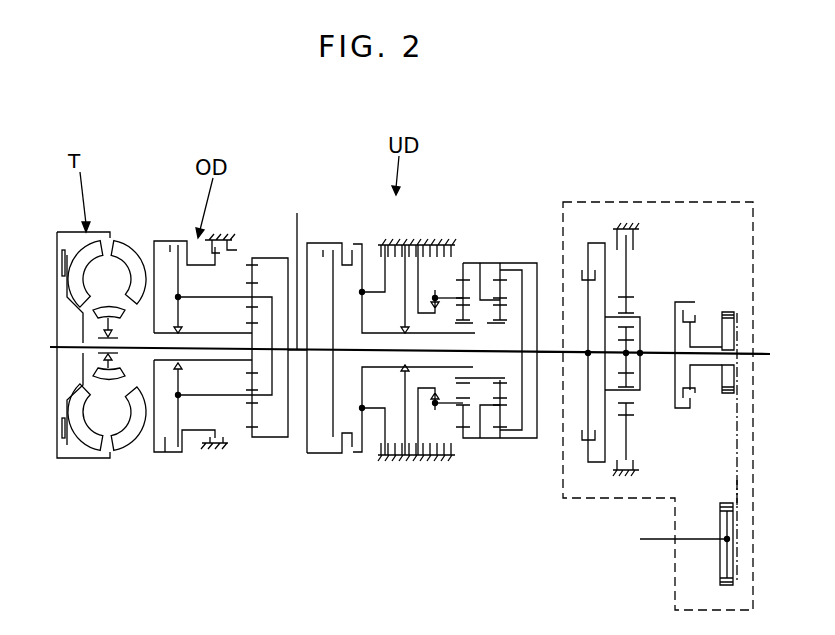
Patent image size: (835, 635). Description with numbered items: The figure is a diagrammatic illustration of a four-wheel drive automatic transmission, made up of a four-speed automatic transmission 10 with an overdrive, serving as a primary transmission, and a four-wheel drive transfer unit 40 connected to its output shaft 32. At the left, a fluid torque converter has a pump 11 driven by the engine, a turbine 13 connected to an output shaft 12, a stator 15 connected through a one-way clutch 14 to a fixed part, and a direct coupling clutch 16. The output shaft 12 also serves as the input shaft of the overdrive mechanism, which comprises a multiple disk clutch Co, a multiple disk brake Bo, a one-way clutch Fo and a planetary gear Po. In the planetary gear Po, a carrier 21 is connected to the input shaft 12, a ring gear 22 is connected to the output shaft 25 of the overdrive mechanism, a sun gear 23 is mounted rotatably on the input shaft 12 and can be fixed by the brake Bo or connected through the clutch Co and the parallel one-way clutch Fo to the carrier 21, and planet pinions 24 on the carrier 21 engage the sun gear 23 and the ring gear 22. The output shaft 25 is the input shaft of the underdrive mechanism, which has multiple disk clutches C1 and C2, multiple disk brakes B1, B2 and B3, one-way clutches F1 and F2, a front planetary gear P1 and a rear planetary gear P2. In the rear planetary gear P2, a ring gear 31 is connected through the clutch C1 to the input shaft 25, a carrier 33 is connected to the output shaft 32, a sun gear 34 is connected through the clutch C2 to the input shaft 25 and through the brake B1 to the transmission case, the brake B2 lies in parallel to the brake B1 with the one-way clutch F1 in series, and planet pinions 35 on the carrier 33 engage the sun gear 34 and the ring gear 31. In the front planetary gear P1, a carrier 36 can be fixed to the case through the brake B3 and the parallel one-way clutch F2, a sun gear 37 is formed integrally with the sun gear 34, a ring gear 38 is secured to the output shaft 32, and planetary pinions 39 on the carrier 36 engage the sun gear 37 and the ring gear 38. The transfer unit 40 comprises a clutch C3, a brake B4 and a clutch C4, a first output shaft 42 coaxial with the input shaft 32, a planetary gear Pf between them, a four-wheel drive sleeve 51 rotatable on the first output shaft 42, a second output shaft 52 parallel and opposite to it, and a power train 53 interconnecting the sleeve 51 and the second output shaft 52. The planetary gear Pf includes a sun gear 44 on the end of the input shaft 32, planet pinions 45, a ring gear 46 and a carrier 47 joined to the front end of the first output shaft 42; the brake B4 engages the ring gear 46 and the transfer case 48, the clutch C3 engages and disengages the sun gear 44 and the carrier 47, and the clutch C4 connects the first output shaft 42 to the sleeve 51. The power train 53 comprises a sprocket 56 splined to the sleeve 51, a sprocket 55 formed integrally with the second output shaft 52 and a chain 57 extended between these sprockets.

The four-speed automatic transmission 10 is at (297, 206).
The pump 11 is at (122, 253).
The output shaft 12 is at (145, 350).
The turbine 13 is at (85, 257).
The one-way clutch 14 is at (110, 363).
The stator 15 is at (100, 313).
The direct coupling clutch 16 is at (62, 262).
The carrier 21 is at (285, 433).
The ring gear 22 is at (272, 405).
The sun gear 23 is at (247, 372).
The planet pinions 24 is at (248, 408).
The output shaft 25 is at (297, 350).
The ring gear 31 is at (498, 292).
The output shaft 32 is at (550, 356).
The carrier 33 is at (485, 292).
The sun gear 34 is at (483, 333).
The planet pinions 35 is at (505, 300).
The carrier 36 is at (445, 293).
The sun gear 37 is at (470, 380).
The ring gear 38 is at (460, 278).
The planetary pinions 39 is at (457, 420).
The four-wheel drive transfer unit 40 is at (648, 188).
The first output shaft 42 is at (760, 354).
The sun gear 44 is at (628, 365).
The planet pinions 45 is at (625, 383).
The ring gear 46 is at (627, 412).
The carrier 47 is at (640, 317).
The transfer case 48 is at (622, 477).
The four-wheel drive sleeve 51 is at (708, 340).
The second output shaft 52 is at (693, 542).
The power train 53 is at (750, 460).
The sprocket 55 is at (728, 567).
The sprocket 56 is at (728, 325).
The chain 57 is at (735, 492).
The multiple disk clutch Co is at (180, 247).
The multiple disk brake Bo is at (237, 247).
The one-way clutch Fo is at (178, 367).
The planetary gear Po is at (258, 260).
The multiple disk clutch C1 is at (318, 243).
The multiple disk clutch C2 is at (358, 245).
The multiple disk brake B1 is at (383, 243).
The multiple disk brake B2 is at (413, 243).
The multiple disk brake B3 is at (438, 243).
The one-way clutch F1 is at (405, 368).
The one-way clutch F2 is at (435, 393).
The front planetary gear P1 is at (459, 458).
The rear planetary gear P2 is at (507, 458).
The clutch C3 is at (583, 270).
The brake B4 is at (613, 237).
The planetary gear Pf is at (642, 266).
The clutch C4 is at (695, 312).